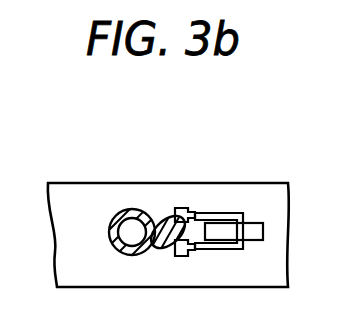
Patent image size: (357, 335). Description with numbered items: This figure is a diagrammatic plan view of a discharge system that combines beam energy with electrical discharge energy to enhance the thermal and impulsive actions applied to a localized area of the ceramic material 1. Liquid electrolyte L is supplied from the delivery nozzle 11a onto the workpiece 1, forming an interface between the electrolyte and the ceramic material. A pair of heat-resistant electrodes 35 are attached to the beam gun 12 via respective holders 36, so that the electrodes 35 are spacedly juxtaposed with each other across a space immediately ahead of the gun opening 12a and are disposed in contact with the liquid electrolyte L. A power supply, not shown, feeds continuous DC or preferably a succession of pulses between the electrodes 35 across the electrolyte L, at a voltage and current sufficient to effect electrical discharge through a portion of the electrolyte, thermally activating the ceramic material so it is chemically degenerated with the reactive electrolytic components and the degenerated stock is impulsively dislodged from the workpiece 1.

The ceramic material workpiece 1 is at (66, 261).
The delivery nozzle 11a is at (125, 212).
The liquid electrolyte L is at (155, 246).
The heat-resistant electrodes 35 is at (178, 208).
The holders 36 is at (218, 213).
The gun opening 12a is at (212, 242).
The beam gun 12 is at (250, 232).